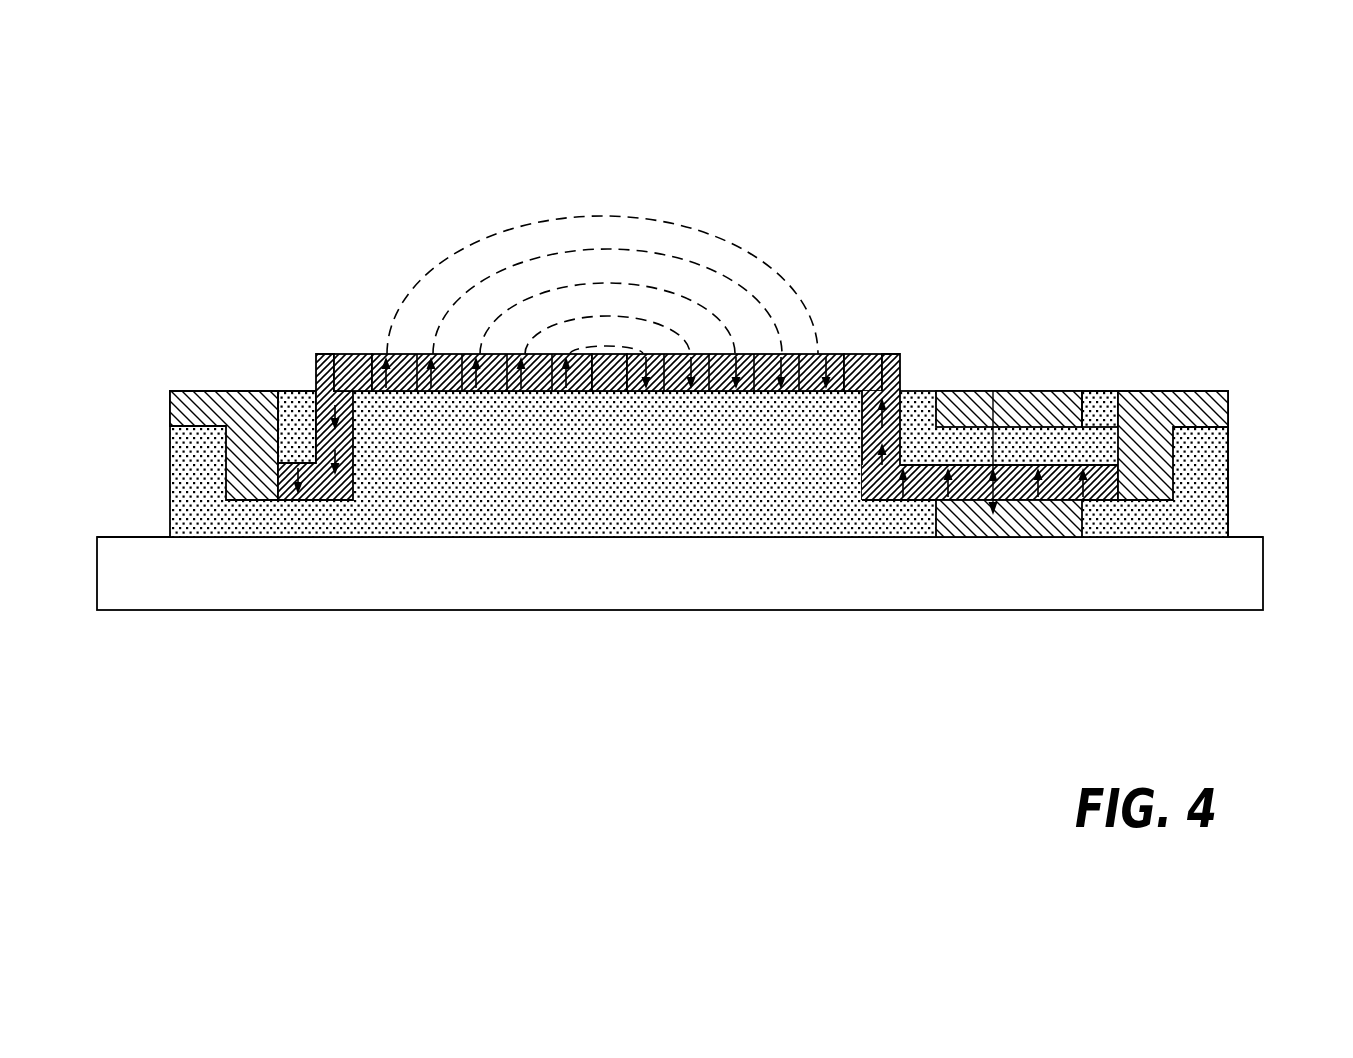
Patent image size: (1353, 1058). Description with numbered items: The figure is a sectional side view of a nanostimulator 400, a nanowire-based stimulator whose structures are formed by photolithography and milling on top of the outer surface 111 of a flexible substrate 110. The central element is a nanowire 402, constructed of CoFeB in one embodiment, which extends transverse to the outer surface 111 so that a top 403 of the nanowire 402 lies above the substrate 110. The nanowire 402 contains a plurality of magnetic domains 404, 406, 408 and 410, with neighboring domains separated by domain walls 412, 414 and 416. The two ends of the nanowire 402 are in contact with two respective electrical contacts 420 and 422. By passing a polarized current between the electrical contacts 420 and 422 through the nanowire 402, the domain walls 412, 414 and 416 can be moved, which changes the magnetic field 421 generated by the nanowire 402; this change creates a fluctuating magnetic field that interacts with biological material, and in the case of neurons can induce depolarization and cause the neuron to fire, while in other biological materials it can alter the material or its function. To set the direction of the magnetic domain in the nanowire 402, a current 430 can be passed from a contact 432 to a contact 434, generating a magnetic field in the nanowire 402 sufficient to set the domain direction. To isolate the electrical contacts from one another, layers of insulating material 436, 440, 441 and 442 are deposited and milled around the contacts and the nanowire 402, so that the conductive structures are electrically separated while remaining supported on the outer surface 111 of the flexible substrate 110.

The nanostimulator 400 is at (713, 395).
The flexible substrate 110 is at (1213, 575).
The outer surface 111 is at (118, 537).
The insulating material layer 442 is at (699, 464).
The insulating material layer 440 is at (1225, 470).
The electrical contact 422 is at (198, 392).
The insulating material layer 441 is at (295, 400).
The nanowire 402 is at (572, 394).
The magnetic domain 404 is at (355, 438).
The domain wall 412 is at (352, 355).
The magnetic domain 406 is at (497, 392).
The domain wall 414 is at (602, 392).
The magnetic domain 408 is at (705, 392).
The domain wall 416 is at (860, 355).
The top of nanowire 403 is at (890, 356).
The magnetic domain 410 is at (862, 470).
The current 430 is at (982, 433).
The contact 432 is at (1057, 405).
The contact 434 is at (1033, 537).
The insulating material layer 436 is at (1108, 395).
The electrical contact 420 is at (1182, 392).
The magnetic field 421 is at (614, 216).